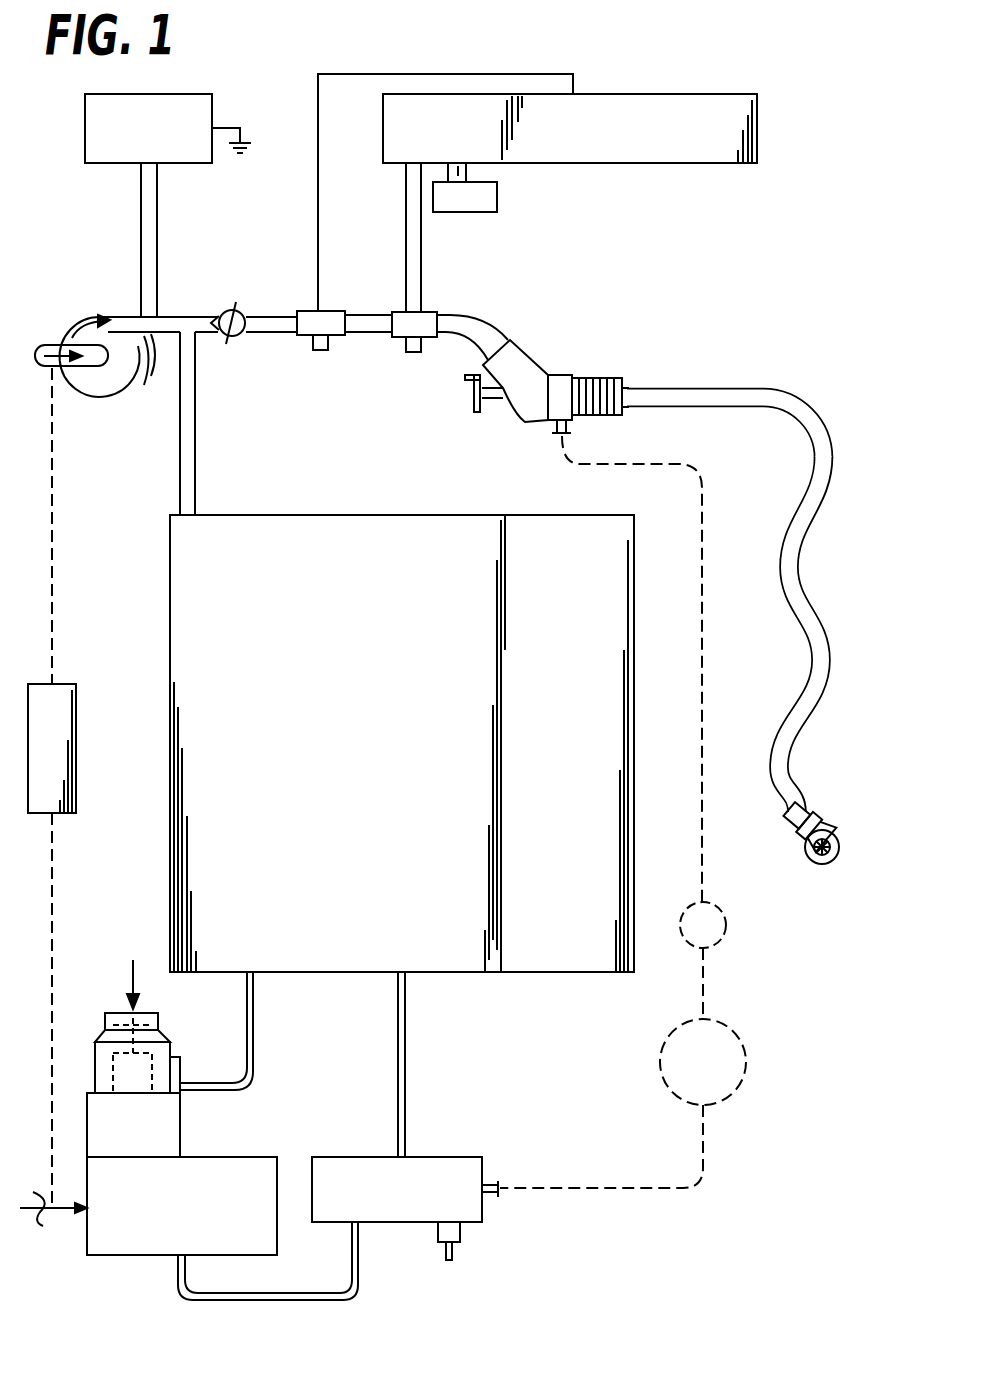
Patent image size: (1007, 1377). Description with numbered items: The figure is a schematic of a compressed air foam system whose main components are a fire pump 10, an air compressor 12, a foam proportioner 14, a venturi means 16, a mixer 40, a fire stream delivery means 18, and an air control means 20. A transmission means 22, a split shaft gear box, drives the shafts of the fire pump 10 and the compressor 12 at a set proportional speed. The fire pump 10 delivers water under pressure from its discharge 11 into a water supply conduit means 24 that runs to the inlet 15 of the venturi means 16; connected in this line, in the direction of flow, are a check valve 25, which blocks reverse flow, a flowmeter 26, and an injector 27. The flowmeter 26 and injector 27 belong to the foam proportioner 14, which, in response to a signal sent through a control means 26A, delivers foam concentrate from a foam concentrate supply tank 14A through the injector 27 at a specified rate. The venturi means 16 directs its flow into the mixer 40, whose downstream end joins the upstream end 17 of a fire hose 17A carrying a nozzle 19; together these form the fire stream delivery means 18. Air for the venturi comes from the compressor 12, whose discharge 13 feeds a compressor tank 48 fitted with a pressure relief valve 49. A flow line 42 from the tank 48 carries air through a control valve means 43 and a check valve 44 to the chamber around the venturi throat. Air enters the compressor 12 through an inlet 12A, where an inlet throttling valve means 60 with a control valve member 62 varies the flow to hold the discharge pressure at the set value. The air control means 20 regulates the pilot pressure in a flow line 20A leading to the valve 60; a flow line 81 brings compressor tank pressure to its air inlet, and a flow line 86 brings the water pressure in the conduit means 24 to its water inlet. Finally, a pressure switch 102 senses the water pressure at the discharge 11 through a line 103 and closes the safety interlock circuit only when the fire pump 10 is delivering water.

The fire pump 10 is at (80, 308).
The discharge 11 is at (104, 362).
The air compressor 12 is at (120, 1256).
The inlet 12A is at (178, 1124).
The discharge 13 is at (187, 1272).
The foam proportioner 14 is at (640, 164).
The foam concentrate supply tank 14A is at (498, 193).
The inlet 15 is at (505, 338).
The venturi means 16 is at (532, 357).
The upstream end 17 is at (634, 402).
The fire hose 17A is at (717, 388).
The fire stream delivery means 18 is at (790, 592).
The nozzle 19 is at (790, 818).
The air control means 20 is at (413, 706).
The flow line 20A is at (257, 1046).
The transmission means 22 is at (67, 738).
The water supply conduit means 24 is at (298, 270).
The check valve 25 is at (245, 340).
The flowmeter 26 is at (319, 352).
The control means 26A is at (319, 204).
The injector 27 is at (413, 353).
The mixer 40 is at (598, 376).
The flow line 42 is at (713, 513).
The control valve means 43 is at (747, 1040).
The check valve 44 is at (728, 928).
The compressor tank 48 is at (433, 1157).
The pressure relief valve 49 is at (461, 1233).
The inlet throttling valve means 60 is at (172, 1052).
The control valve member 62 is at (142, 1011).
The flow line 81 is at (406, 1056).
The flow line 86 is at (197, 490).
The pressure switch 102 is at (85, 145).
The line 103 is at (158, 246).